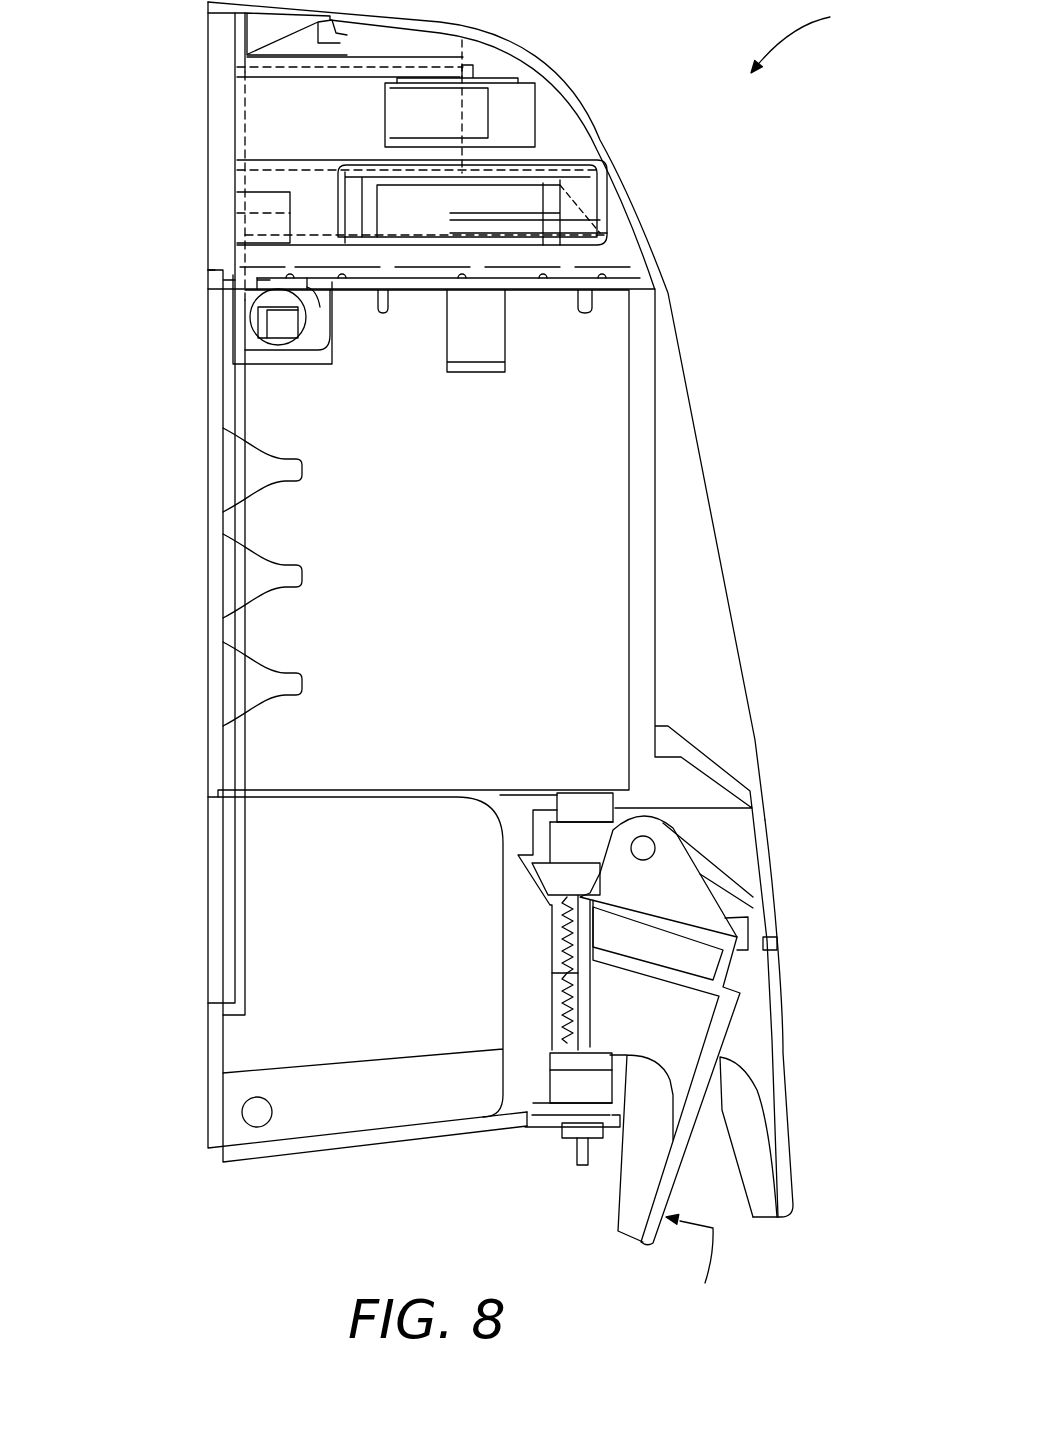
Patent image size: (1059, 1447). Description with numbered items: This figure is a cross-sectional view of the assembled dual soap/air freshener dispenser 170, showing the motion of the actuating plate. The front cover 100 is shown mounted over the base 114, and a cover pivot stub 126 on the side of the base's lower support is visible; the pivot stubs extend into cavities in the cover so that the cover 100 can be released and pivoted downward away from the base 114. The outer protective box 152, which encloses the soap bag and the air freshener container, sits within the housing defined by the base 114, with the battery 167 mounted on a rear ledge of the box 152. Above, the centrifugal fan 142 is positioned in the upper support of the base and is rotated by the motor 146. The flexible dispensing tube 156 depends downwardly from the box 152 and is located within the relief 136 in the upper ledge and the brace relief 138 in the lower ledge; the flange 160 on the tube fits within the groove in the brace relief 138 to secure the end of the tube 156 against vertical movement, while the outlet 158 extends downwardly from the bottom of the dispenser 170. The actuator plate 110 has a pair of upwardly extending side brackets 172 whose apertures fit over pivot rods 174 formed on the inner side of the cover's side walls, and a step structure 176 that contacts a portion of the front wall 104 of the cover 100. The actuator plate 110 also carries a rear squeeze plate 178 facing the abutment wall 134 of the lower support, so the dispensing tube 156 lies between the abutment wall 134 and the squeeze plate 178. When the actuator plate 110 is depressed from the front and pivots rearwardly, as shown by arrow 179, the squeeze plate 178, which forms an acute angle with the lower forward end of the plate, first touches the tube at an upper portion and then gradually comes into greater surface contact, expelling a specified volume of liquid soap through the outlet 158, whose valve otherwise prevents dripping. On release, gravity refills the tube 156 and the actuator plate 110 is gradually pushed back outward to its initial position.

The front cover 100 is at (664, 294).
The front wall 104 is at (777, 915).
The actuator plate 110 is at (790, 1155).
The base 114 is at (217, 883).
The cover pivot stubs 126 is at (253, 1127).
The abutment wall 134 is at (560, 1008).
The relief 136 is at (550, 837).
The brace relief 138 is at (556, 1076).
The centrifugal fan 142 is at (545, 192).
The motor 146 is at (535, 107).
The outer protective box 152 is at (630, 553).
The dispensing tube 156 is at (563, 1087).
The outlet 158 is at (573, 1160).
The flange 160 is at (507, 1117).
The battery 167 is at (272, 297).
The dual soap/air freshener dispenser 170 is at (822, 36).
The side brackets 172 is at (703, 880).
The pivot rods 174 is at (650, 848).
The step structure 176 is at (773, 946).
The squeeze plate 178 is at (565, 912).
The arrow 179 is at (696, 1268).